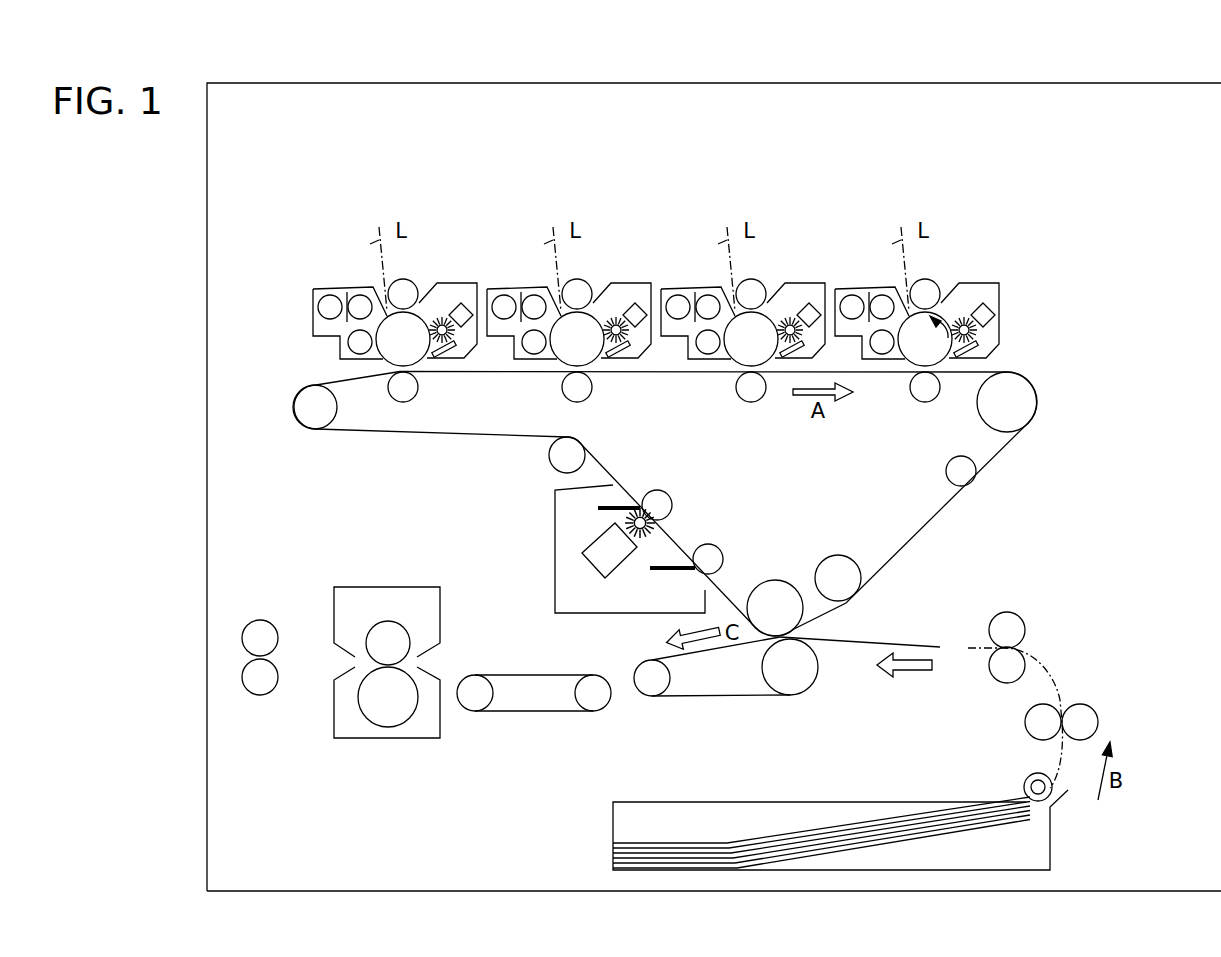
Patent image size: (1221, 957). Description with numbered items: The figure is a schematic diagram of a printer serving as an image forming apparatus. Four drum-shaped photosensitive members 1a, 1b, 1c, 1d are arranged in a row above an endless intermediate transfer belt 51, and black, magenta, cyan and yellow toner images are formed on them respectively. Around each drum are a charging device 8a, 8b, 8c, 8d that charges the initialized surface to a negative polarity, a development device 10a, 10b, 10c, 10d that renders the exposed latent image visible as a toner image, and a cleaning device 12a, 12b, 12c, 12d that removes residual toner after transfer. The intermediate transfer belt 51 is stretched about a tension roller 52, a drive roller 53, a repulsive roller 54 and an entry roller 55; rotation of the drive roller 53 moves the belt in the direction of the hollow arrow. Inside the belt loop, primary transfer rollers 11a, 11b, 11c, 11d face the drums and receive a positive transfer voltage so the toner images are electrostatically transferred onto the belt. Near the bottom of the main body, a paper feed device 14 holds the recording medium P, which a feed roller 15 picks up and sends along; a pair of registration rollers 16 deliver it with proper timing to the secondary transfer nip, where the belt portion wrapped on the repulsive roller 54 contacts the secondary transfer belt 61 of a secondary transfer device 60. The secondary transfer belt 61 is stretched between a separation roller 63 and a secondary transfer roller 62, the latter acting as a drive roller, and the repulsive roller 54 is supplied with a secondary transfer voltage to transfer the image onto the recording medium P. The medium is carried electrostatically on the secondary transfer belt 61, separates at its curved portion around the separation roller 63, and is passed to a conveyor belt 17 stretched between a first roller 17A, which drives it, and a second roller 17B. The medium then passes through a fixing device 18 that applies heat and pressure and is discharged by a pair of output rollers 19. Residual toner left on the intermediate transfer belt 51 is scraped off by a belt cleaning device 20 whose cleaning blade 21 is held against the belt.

The photosensitive member 1a is at (914, 352).
The photosensitive member 1b is at (740, 352).
The photosensitive member 1c is at (566, 352).
The photosensitive member 1d is at (392, 352).
The charging device 8a is at (928, 283).
The charging device 8b is at (754, 283).
The charging device 8c is at (580, 283).
The charging device 8d is at (406, 283).
The development device 10a is at (867, 289).
The development device 10b is at (693, 289).
The development device 10c is at (519, 289).
The development device 10d is at (345, 289).
The primary transfer roller 11a is at (912, 392).
The primary transfer roller 11b is at (738, 392).
The primary transfer roller 11c is at (593, 390).
The primary transfer roller 11d is at (419, 390).
The cleaning device 12a is at (975, 286).
The cleaning device 12b is at (801, 286).
The cleaning device 12c is at (627, 286).
The cleaning device 12d is at (453, 286).
The paper feed device 14 is at (1050, 840).
The feed roller 15 is at (1030, 778).
The pair of registration rollers 16 is at (1008, 614).
The conveyor belt 17 is at (531, 720).
The first roller 17A is at (592, 705).
The second roller 17B is at (476, 705).
The fixing device 18 is at (388, 587).
The pair of output rollers 19 is at (260, 620).
The belt cleaning device 20 is at (555, 520).
The cleaning blade 21 is at (671, 569).
The intermediate transfer belt 51 is at (948, 510).
The tension roller 52 is at (338, 408).
The drive roller 53 is at (1020, 384).
The repulsive roller 54 is at (770, 581).
The entry roller 55 is at (846, 556).
The secondary transfer device 60 is at (743, 702).
The secondary transfer belt 61 is at (722, 697).
The secondary transfer roller 62 is at (763, 661).
The separation roller 63 is at (655, 688).
The recording medium P is at (910, 822).